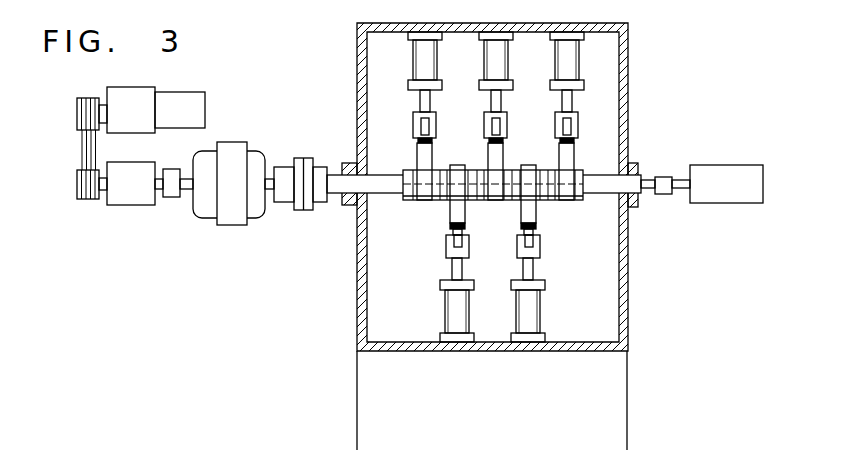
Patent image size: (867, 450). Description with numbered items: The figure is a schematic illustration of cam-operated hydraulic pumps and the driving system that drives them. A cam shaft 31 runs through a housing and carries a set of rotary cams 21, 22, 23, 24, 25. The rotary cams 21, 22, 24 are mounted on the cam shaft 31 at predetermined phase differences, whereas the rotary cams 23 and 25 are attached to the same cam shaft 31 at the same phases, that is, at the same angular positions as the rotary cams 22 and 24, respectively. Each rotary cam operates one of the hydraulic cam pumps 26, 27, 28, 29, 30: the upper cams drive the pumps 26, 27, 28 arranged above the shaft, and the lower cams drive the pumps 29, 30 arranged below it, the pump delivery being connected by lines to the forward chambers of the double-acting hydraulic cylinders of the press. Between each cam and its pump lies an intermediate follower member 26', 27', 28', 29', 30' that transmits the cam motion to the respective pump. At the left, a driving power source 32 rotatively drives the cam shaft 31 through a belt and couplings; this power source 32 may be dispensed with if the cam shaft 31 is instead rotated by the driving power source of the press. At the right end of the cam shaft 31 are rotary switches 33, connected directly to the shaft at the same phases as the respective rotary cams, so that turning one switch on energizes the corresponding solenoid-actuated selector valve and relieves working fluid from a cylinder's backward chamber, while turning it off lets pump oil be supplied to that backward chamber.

The rotary cam 21 is at (419, 158).
The rotary cam 22 is at (490, 156).
The rotary cam 23 is at (562, 156).
The rotary cam 24 is at (450, 216).
The rotary cam 25 is at (522, 216).
The hydraulic cam pump 26 is at (443, 72).
The hydraulic cam pump 27 is at (514, 72).
The hydraulic cam pump 28 is at (584, 72).
The cam follower 26' is at (446, 119).
The cam follower 27' is at (518, 119).
The cam follower 28' is at (587, 119).
The hydraulic cam pump 29 is at (475, 300).
The hydraulic cam pump 30 is at (547, 300).
The cam follower 29' is at (481, 252).
The cam follower 30' is at (553, 240).
The cam shaft 31 is at (378, 196).
The driving power source 32 is at (180, 262).
The rotary switch 33 is at (733, 150).